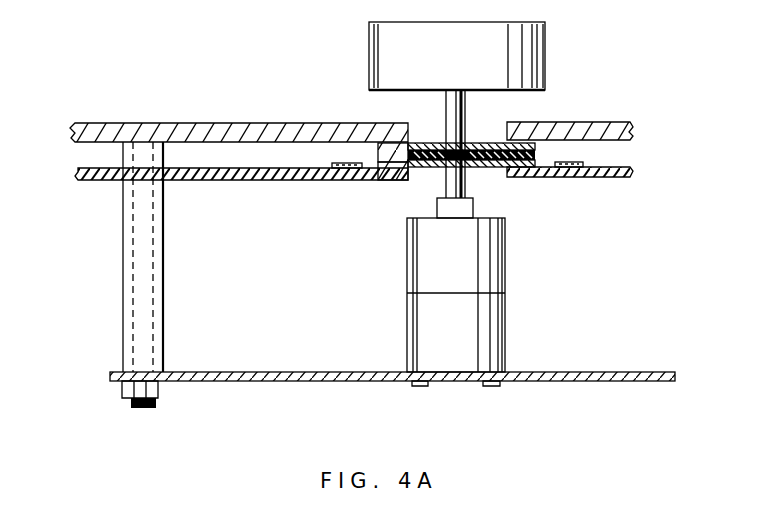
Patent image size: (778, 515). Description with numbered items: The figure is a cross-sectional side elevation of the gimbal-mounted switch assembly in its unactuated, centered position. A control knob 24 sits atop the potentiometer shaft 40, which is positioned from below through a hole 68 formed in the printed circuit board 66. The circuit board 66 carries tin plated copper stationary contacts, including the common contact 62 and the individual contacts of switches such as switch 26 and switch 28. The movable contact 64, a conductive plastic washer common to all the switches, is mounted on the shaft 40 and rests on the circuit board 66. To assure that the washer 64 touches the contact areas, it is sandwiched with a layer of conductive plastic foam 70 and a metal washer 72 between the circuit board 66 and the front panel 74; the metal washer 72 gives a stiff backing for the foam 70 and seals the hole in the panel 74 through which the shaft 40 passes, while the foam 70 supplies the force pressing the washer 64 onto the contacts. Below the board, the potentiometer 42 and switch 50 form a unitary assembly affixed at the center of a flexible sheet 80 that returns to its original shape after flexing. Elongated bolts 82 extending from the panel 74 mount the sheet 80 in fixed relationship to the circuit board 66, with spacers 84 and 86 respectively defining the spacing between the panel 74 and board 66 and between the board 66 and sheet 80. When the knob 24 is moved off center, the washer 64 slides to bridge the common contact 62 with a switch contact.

The control knob 24 is at (545, 68).
The metal washer 72 is at (470, 135).
The conductive plastic foam 70 is at (366, 143).
The front panel 74 is at (226, 122).
The spacer 84 is at (135, 155).
The switch 28 is at (341, 163).
The printed circuit board 66 is at (260, 182).
The hole 68 is at (412, 180).
The movable contact 64 is at (495, 165).
The potentiometer shaft 40 is at (467, 185).
The switch 26 is at (588, 162).
The common contact 62 is at (575, 122).
The potentiometer 42 is at (506, 272).
The switch 50 is at (506, 333).
The sheet 80 is at (600, 372).
The spacer 86 is at (165, 305).
The elongated bolt 82 is at (160, 405).